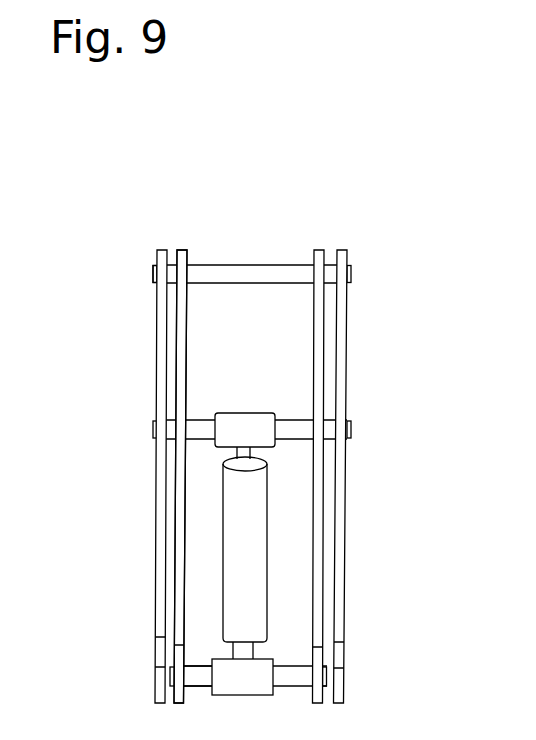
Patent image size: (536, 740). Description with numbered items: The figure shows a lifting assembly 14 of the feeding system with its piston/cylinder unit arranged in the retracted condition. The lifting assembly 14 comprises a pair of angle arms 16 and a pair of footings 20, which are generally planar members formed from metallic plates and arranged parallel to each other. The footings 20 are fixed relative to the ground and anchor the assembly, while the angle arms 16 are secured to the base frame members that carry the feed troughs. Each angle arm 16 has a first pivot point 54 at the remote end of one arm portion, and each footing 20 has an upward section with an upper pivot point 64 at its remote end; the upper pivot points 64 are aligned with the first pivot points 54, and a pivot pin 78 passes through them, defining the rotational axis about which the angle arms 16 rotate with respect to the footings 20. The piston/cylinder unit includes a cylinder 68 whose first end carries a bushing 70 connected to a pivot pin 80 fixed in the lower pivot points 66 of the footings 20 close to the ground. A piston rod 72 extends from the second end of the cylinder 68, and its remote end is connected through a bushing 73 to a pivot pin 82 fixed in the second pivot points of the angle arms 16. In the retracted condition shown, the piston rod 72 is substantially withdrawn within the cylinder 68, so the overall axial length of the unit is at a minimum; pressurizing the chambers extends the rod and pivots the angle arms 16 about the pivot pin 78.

The lifting assembly 14 is at (383, 230).
The angle arms 16 is at (162, 492).
The footings 20 is at (183, 543).
The first pivot point 54 is at (153, 270).
The upper pivot point 64 is at (185, 273).
The pivot pin 78 is at (275, 273).
The pivot pin 82 is at (188, 425).
The bushing 73 is at (270, 433).
The piston rod 72 is at (240, 458).
The cylinder 68 is at (263, 580).
The bushing 70 is at (273, 662).
The pivot pin 80 is at (195, 668).
The lower pivot point 66 is at (325, 677).